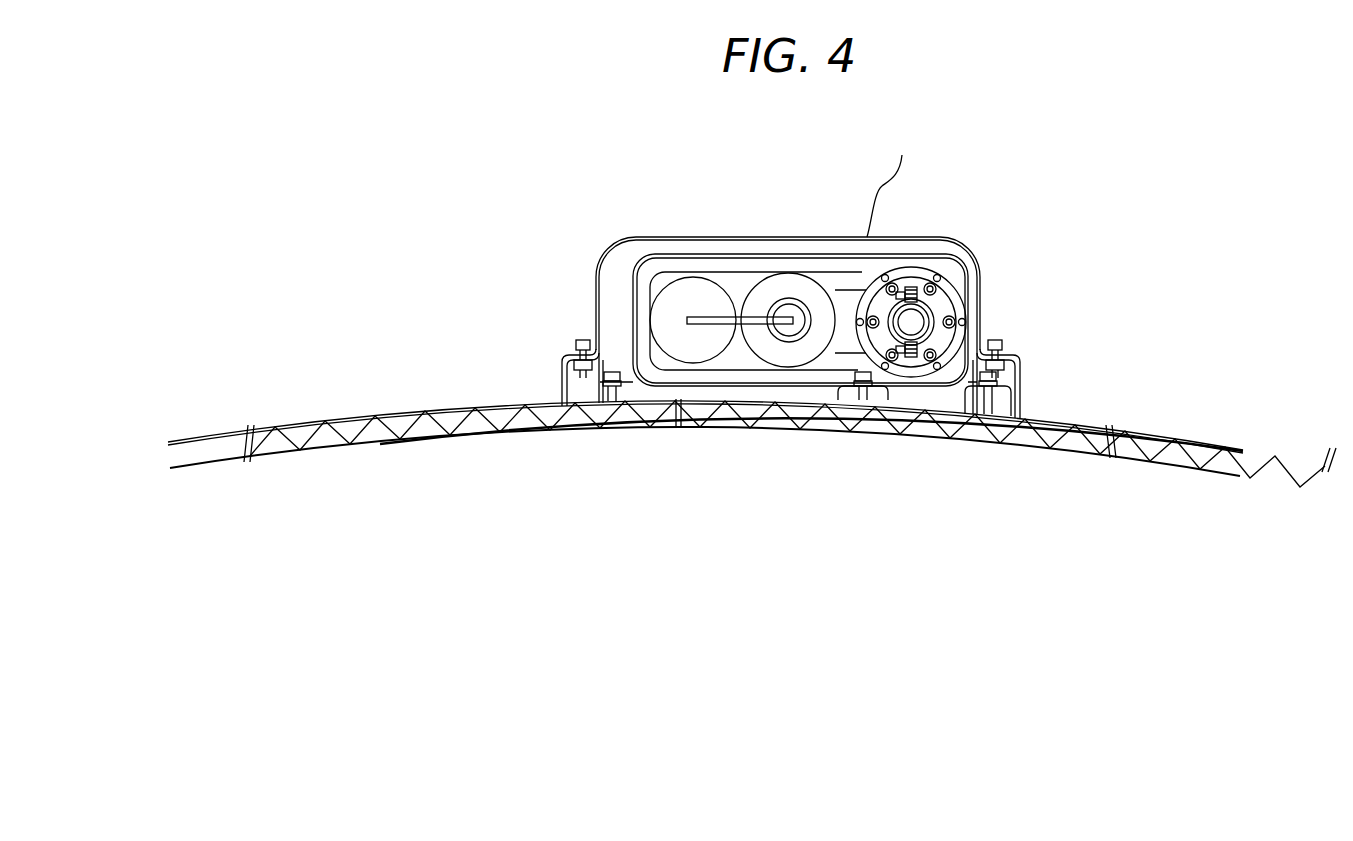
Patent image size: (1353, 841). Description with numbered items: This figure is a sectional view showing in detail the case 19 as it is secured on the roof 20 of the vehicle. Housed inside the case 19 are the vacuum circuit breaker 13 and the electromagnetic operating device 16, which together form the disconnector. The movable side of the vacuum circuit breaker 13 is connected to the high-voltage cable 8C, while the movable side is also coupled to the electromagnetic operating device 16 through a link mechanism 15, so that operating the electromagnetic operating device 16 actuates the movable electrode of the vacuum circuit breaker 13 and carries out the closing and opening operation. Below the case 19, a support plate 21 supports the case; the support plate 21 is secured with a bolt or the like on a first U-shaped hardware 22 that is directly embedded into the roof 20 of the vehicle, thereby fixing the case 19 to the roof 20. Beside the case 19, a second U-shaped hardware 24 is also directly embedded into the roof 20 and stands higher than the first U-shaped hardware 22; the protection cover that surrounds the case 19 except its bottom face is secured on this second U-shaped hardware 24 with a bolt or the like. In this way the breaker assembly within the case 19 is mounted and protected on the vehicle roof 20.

The electromagnetic operating device 16 is at (678, 285).
The vacuum circuit breaker 13 is at (800, 277).
The link mechanism 15 is at (722, 322).
The case 19 is at (920, 257).
The high-voltage cable 8C is at (913, 320).
The second U-shaped hardware 24 is at (562, 385).
The support plate 21 is at (633, 382).
The first U-shaped hardware 22 is at (850, 383).
The roof 20 is at (1195, 428).